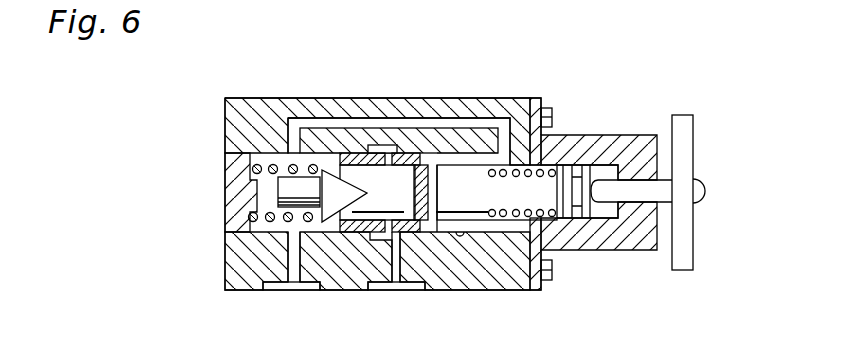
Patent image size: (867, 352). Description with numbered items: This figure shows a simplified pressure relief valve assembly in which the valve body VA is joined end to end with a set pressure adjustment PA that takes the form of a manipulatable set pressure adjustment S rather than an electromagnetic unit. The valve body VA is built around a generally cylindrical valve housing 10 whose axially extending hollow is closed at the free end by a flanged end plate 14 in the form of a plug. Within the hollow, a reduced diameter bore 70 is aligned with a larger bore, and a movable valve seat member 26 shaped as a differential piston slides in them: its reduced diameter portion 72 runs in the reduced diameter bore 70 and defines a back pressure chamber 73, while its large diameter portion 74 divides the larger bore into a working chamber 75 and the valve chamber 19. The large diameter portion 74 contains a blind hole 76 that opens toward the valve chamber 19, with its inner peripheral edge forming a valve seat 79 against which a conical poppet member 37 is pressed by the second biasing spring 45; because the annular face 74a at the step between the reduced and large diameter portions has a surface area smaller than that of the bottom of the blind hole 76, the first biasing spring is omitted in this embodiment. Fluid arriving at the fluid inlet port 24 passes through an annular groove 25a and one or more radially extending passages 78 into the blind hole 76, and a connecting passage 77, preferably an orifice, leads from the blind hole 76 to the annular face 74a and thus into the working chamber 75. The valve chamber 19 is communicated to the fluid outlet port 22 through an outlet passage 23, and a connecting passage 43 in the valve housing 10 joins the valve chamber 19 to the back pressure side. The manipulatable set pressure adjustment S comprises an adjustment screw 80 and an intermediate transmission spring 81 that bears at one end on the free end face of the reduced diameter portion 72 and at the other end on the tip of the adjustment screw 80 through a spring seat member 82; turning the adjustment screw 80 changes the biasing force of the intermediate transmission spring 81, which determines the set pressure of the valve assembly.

The valve housing 10 is at (233, 106).
The connecting passage 43 is at (292, 135).
The poppet member 37 is at (300, 121).
The flanged end plate 14 is at (233, 172).
The second biasing spring 45 is at (275, 172).
The valve chamber 19 is at (237, 226).
The outlet passage 23 is at (290, 248).
The fluid outlet port 22 is at (278, 290).
The movable valve seat member 26 is at (320, 283).
The annular groove 25a is at (354, 226).
The fluid inlet port 24 is at (372, 282).
The annular face 74a is at (434, 233).
The reduced diameter bore 70 is at (462, 238).
The blind hole 76 is at (379, 198).
The large diameter portion 74 is at (366, 150).
The radially extending passage 78 is at (387, 165).
The valve seat 79 is at (328, 155).
The connecting passage 77 is at (427, 160).
The working chamber 75 is at (457, 160).
The valve body VA is at (479, 95).
The reduced diameter portion 72 is at (527, 192).
The back pressure chamber 73 is at (512, 187).
The intermediate transmission spring 81 is at (549, 217).
The spring seat member 82 is at (572, 183).
The adjustment screw 80 is at (640, 190).
The set pressure adjustment PA is at (628, 132).
The manipulatable set pressure adjustment S is at (616, 256).